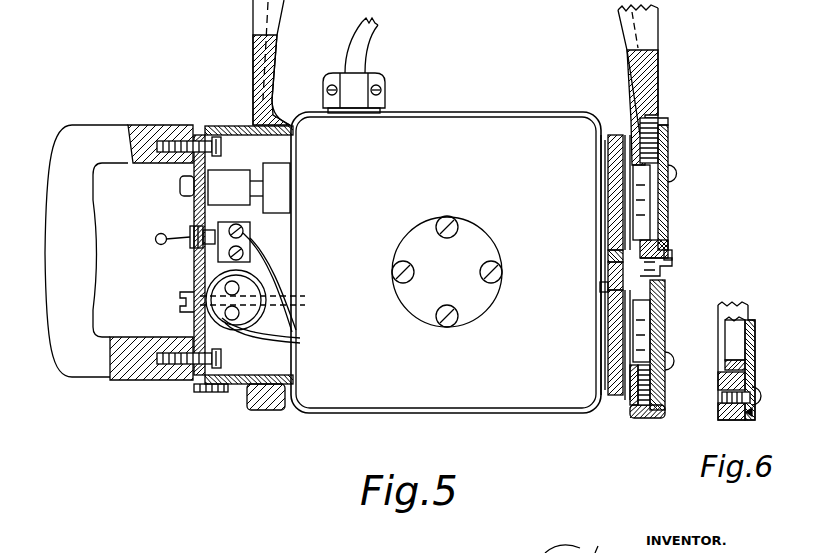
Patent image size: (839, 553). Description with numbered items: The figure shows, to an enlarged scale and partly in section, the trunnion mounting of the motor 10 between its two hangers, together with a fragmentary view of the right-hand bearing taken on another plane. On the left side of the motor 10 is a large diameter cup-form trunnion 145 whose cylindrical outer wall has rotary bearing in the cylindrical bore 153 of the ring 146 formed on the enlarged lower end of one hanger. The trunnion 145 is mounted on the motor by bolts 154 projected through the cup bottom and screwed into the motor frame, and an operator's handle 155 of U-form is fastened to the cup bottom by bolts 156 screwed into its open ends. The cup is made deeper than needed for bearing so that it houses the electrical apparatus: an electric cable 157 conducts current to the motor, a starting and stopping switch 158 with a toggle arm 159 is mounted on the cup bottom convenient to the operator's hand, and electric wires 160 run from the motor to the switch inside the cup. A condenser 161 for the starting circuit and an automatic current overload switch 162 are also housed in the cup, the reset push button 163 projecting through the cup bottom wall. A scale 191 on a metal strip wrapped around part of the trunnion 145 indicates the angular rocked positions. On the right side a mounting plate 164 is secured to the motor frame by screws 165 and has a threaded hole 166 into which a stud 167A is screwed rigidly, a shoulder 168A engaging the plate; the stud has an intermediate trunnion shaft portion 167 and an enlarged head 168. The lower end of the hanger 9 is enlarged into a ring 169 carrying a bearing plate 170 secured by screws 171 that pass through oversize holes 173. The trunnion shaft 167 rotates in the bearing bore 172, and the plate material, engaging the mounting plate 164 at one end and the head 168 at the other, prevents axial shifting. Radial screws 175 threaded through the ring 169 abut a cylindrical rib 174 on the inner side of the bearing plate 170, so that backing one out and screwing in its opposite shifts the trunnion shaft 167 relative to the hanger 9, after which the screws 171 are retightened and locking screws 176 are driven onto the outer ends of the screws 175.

In FIG. 5, the hanger 9 is at (658, 30).
In FIG. 5, the motor 10 is at (446, 262).
In FIG. 5, the trunnion 145 is at (240, 127).
In FIG. 5, the ring 146 is at (262, 411).
In FIG. 5, the cylindrical bore 153 is at (278, 108).
In FIG. 5, the bolt 154 is at (184, 292).
In FIG. 5, the operator's handle 155 is at (55, 271).
In FIG. 5, the bolt 156 is at (221, 147).
In FIG. 5, the electric cable 157 is at (363, 58).
In FIG. 5, the switch 158 is at (192, 231).
In FIG. 5, the toggle arm 159 is at (163, 246).
In FIG. 5, the electric wires 160 is at (264, 262).
In FIG. 5, the condenser 161 is at (248, 326).
In FIG. 5, the automatic current overload switch 162 is at (249, 188).
In FIG. 5, the reset push button 163 is at (180, 186).
In FIG. 5, the mounting plate 164 is at (617, 200).
In FIG. 5, the screw 165 is at (588, 160).
In FIG. 5, the threaded hole 166 is at (612, 250).
In FIG. 5, the trunnion shaft portion 167 is at (665, 240).
In FIG. 5, the stud 167A is at (612, 266).
In FIG. 5, the enlarged head 168 is at (672, 252).
In FIG. 5, the shoulder 168A is at (673, 256).
In FIG. 5, the ring 169 is at (627, 420).
In FIG. 6, the ring 169 is at (722, 420).
In FIG. 5, the bearing plate 170 is at (660, 323).
In FIG. 6, the bearing plate 170 is at (751, 349).
In FIG. 5, the screw 171 is at (673, 170).
In FIG. 6, the screw 171 is at (754, 386).
In FIG. 5, the bearing bore 172 is at (610, 292).
In FIG. 6, the hole 173 is at (753, 412).
In FIG. 5, the cylindrical rib 174 is at (648, 355).
In FIG. 6, the cylindrical rib 174 is at (728, 364).
In FIG. 5, the radial screw 175 is at (655, 150).
In FIG. 5, the locking screw 176 is at (660, 122).
In FIG. 5, the scale 191 is at (210, 393).